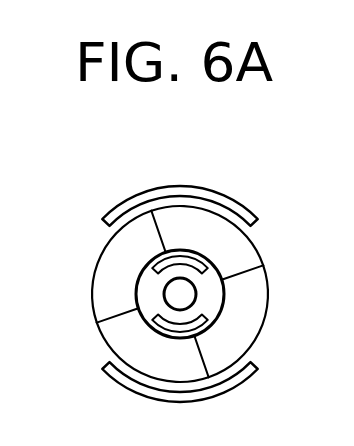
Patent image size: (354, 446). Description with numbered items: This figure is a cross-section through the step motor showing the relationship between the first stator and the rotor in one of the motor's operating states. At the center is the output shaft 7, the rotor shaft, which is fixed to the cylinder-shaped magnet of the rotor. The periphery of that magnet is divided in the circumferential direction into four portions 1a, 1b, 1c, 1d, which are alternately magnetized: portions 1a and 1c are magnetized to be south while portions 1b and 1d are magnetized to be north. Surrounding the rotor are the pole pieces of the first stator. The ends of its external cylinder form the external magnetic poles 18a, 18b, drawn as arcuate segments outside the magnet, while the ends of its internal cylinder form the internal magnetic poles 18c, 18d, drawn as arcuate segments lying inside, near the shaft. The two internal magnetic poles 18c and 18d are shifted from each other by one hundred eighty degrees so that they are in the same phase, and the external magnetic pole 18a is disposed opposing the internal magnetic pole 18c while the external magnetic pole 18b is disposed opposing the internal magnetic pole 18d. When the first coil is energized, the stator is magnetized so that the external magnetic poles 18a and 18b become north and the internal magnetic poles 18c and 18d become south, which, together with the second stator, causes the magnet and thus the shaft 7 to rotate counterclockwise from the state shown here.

The magnet portion 1a is at (254, 248).
The magnet portion 1b is at (106, 250).
The magnet portion 1c is at (104, 338).
The magnet portion 1d is at (234, 342).
The output shaft 7 is at (172, 296).
The external magnetic pole 18a is at (149, 189).
The external magnetic pole 18b is at (137, 392).
The internal magnetic pole 18c is at (208, 274).
The internal magnetic pole 18d is at (207, 322).